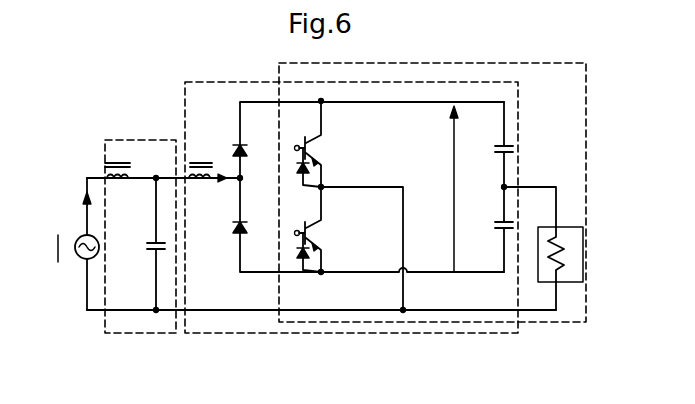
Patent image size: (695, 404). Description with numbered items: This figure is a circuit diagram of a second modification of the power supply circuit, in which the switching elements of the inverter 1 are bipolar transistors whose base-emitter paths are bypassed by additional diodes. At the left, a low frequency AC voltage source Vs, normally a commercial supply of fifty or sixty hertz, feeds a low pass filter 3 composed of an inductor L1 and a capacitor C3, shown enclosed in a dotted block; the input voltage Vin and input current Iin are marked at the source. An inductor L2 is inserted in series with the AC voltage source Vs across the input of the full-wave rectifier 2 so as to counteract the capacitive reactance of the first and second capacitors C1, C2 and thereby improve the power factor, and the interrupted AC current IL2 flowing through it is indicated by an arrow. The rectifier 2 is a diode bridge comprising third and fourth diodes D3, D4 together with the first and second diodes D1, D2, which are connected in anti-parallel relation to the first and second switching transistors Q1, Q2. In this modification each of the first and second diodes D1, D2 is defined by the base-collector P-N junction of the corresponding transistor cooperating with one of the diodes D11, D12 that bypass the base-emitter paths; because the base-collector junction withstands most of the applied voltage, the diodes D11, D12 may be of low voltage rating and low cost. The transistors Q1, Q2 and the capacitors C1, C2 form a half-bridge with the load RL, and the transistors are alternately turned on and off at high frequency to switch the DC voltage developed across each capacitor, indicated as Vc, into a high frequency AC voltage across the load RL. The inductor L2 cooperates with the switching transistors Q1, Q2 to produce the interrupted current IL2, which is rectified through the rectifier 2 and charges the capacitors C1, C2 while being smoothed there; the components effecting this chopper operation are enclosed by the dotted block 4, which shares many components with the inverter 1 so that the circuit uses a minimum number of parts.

The inverter 1 is at (465, 63).
The full-wave rectifier 2 is at (258, 274).
The low pass filter 3 is at (145, 334).
The chopper circuit 4 is at (358, 334).
The inductor L1 is at (130, 161).
The inductor L2 is at (199, 159).
The capacitor C3 is at (136, 244).
The first capacitor C1 is at (495, 144).
The second capacitor C2 is at (492, 229).
The first diode D1 is at (292, 138).
The second diode D2 is at (297, 223).
The third diode D3 is at (254, 151).
The fourth diode D4 is at (254, 234).
The diode D11 is at (307, 172).
The diode D12 is at (307, 258).
The first switching transistor Q1 is at (323, 144).
The second switching transistor Q2 is at (323, 231).
The load RL is at (585, 225).
The AC voltage source Vs is at (82, 260).
The input voltage Vin is at (43, 250).
The input current Iin is at (145, 191).
The interrupted AC current IL2 is at (215, 191).
The output voltage Vc is at (442, 189).